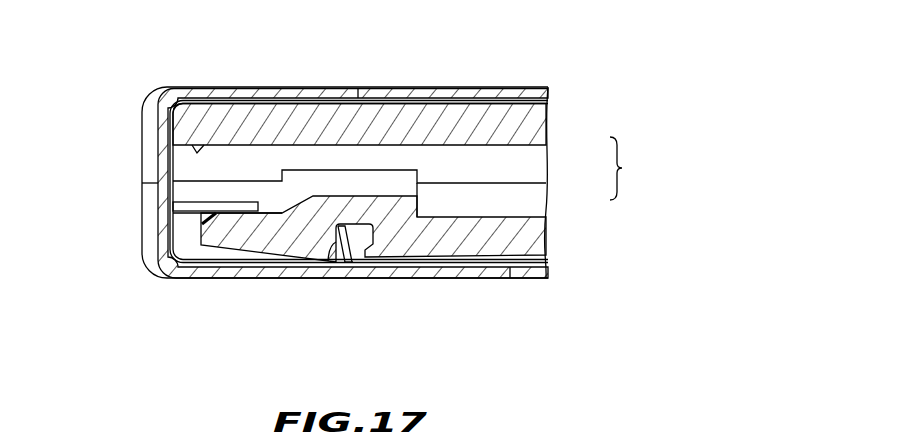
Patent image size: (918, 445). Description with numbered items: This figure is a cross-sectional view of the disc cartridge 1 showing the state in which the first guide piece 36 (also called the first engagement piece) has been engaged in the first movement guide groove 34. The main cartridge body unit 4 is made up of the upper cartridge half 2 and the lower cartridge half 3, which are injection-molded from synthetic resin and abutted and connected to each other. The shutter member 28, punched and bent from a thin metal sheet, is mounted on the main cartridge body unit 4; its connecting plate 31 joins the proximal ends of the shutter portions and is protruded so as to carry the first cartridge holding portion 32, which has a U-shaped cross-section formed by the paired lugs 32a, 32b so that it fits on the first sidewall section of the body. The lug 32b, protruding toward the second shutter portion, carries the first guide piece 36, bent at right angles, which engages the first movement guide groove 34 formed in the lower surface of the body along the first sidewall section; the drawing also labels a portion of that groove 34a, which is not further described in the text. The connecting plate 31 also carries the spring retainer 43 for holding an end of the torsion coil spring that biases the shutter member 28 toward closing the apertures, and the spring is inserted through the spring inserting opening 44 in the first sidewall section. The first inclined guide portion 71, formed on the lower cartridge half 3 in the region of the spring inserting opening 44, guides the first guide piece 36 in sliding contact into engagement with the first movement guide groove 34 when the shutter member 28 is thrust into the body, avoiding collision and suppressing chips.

The disc cartridge 1 is at (514, 73).
The shutter member 28 is at (175, 68).
The first cartridge holding portion 32 is at (160, 243).
The lug 32a is at (267, 88).
The lug 32b is at (436, 268).
The connecting plate 31 is at (157, 133).
The upper cartridge half 2 is at (549, 127).
The lower cartridge half 3 is at (528, 237).
The main cartridge body unit 4 is at (627, 168).
The spring retainer 43 is at (238, 201).
The spring inserting opening 44 is at (197, 152).
The first inclined guide portion 71 is at (223, 250).
The first movement guide groove 34 is at (358, 257).
The terminal contact portion 34a is at (341, 262).
The first guide piece 36 is at (332, 252).